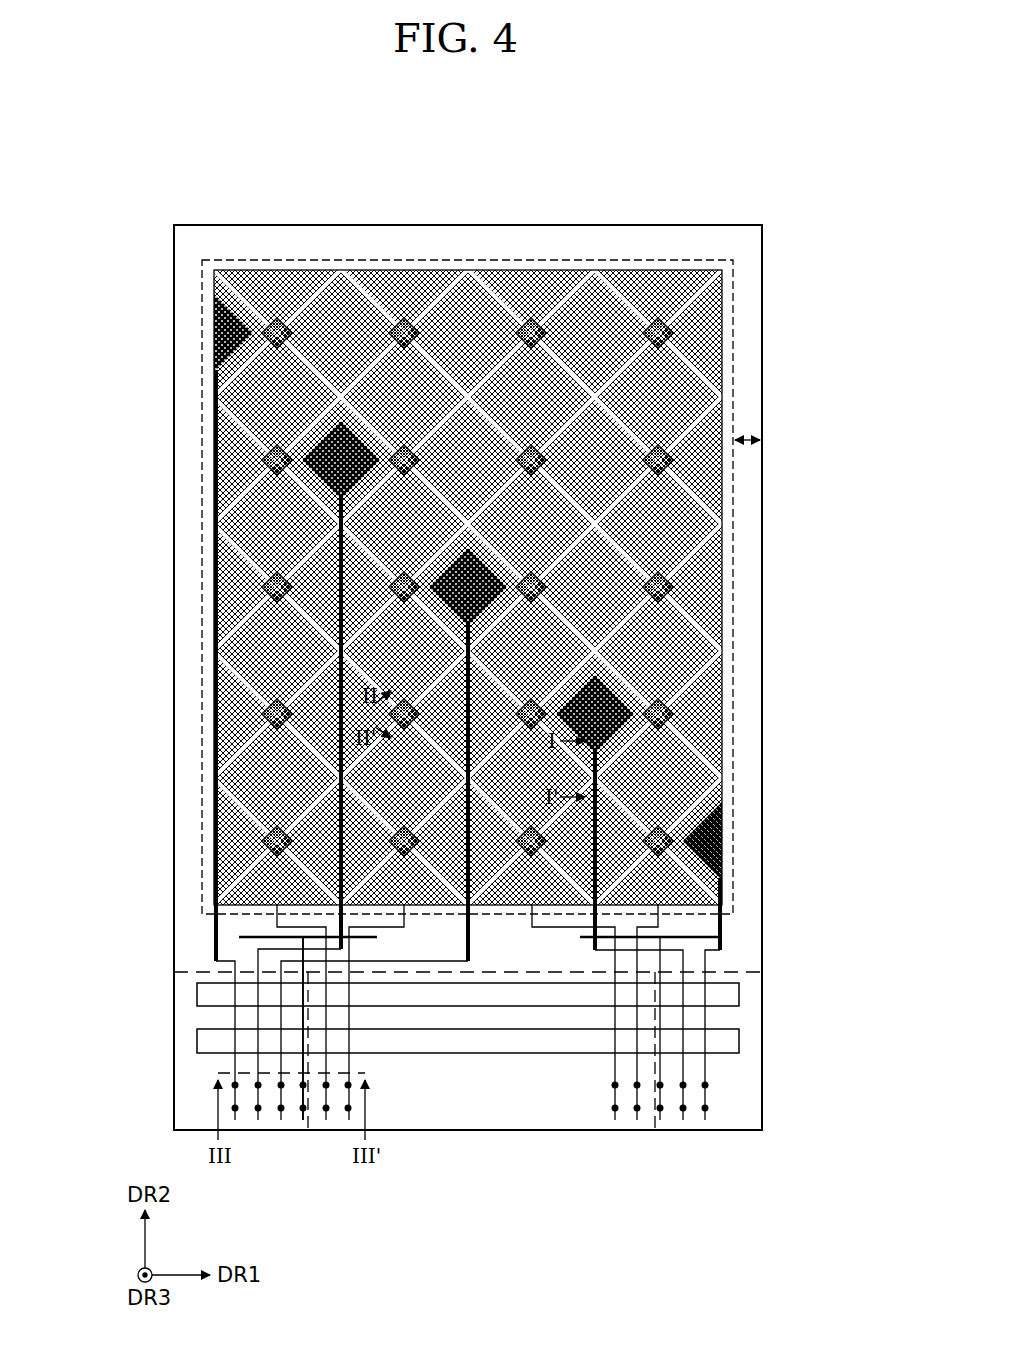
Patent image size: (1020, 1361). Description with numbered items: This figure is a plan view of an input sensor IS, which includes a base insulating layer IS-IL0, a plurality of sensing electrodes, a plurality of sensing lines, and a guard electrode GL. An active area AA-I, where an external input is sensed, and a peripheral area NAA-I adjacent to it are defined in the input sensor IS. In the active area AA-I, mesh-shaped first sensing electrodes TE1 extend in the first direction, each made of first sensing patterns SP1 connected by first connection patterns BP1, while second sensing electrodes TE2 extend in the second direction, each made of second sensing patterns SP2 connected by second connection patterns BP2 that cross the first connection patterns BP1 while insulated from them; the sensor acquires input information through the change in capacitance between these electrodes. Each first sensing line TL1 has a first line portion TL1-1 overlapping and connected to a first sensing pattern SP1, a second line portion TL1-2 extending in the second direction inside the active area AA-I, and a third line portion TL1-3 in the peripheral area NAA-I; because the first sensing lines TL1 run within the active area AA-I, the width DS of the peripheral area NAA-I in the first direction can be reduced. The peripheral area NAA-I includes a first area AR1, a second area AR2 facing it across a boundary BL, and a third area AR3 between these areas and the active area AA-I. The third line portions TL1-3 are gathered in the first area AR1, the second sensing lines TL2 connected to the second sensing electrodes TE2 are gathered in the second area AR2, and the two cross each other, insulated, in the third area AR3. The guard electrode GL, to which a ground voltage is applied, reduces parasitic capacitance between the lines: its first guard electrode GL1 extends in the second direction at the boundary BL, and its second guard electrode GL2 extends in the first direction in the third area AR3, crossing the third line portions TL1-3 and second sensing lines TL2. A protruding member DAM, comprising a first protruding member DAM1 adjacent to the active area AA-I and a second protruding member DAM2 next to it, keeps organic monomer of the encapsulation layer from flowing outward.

The first sensing electrode TE1 is at (573, 172).
The first sensing pattern SP1 is at (470, 287).
The first connection pattern BP1 is at (531, 322).
The second sensing electrode TE2 is at (853, 295).
The second sensing pattern SP2 is at (690, 378).
The second connection pattern BP2 is at (667, 330).
The input sensor IS is at (720, 171).
The width of the peripheral area DS is at (752, 436).
The peripheral area NAA-I is at (755, 515).
The active area AA-I is at (731, 565).
The base insulating layer IS-IL0 is at (762, 653).
The first line portion TL1-1 is at (213, 355).
The second line portion TL1-2 is at (213, 722).
The third line portion TL1-3 is at (213, 922).
The first sensing line TL1 is at (62, 348).
The second sensing line TL2 is at (277, 922).
The third area AR3 is at (188, 963).
The second guard electrode GL2 is at (272, 950).
The first guard electrode GL1 is at (303, 1063).
The guard electrode GL is at (92, 985).
The first area AR1 is at (188, 1107).
The first protruding member DAM1 is at (739, 992).
The second protruding member DAM2 is at (739, 1037).
The protruding member DAM is at (866, 980).
The boundary BL is at (310, 1104).
The second area AR2 is at (487, 1108).